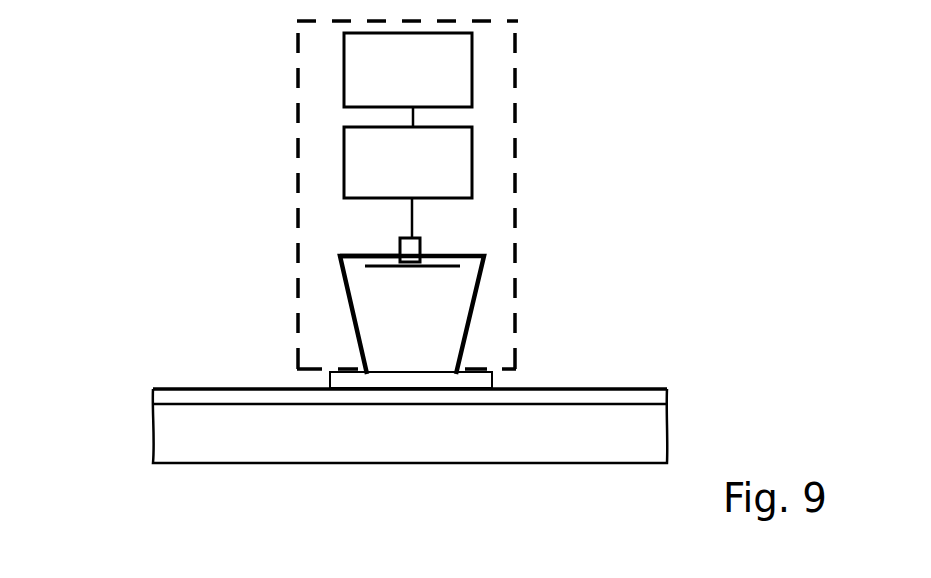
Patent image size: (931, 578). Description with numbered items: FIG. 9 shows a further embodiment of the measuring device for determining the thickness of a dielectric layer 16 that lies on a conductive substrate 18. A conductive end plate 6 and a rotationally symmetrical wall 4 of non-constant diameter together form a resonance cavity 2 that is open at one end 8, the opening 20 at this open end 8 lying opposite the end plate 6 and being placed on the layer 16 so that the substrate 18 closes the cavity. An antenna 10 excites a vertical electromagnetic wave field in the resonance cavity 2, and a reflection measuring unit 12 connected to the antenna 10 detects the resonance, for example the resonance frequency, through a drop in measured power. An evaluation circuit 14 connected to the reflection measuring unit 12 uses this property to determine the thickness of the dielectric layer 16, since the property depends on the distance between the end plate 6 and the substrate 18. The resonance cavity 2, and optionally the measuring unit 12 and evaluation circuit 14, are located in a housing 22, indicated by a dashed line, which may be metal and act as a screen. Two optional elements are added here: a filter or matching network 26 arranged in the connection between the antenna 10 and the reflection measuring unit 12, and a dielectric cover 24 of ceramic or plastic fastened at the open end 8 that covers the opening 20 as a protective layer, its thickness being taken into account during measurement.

The resonance cavity 2 is at (380, 309).
The rotationally symmetrical wall 4 is at (355, 328).
The end plate 6 is at (355, 255).
The open end 8 is at (367, 375).
The antenna 10 is at (427, 267).
The reflection measuring unit 12 is at (480, 168).
The evaluation circuit 14 is at (449, 72).
The dielectric layer 16 is at (170, 399).
The substrate 18 is at (182, 442).
The opening 20 is at (405, 362).
The housing 22 is at (515, 215).
The dielectric cover 24 is at (492, 382).
The matching network 26 is at (421, 237).